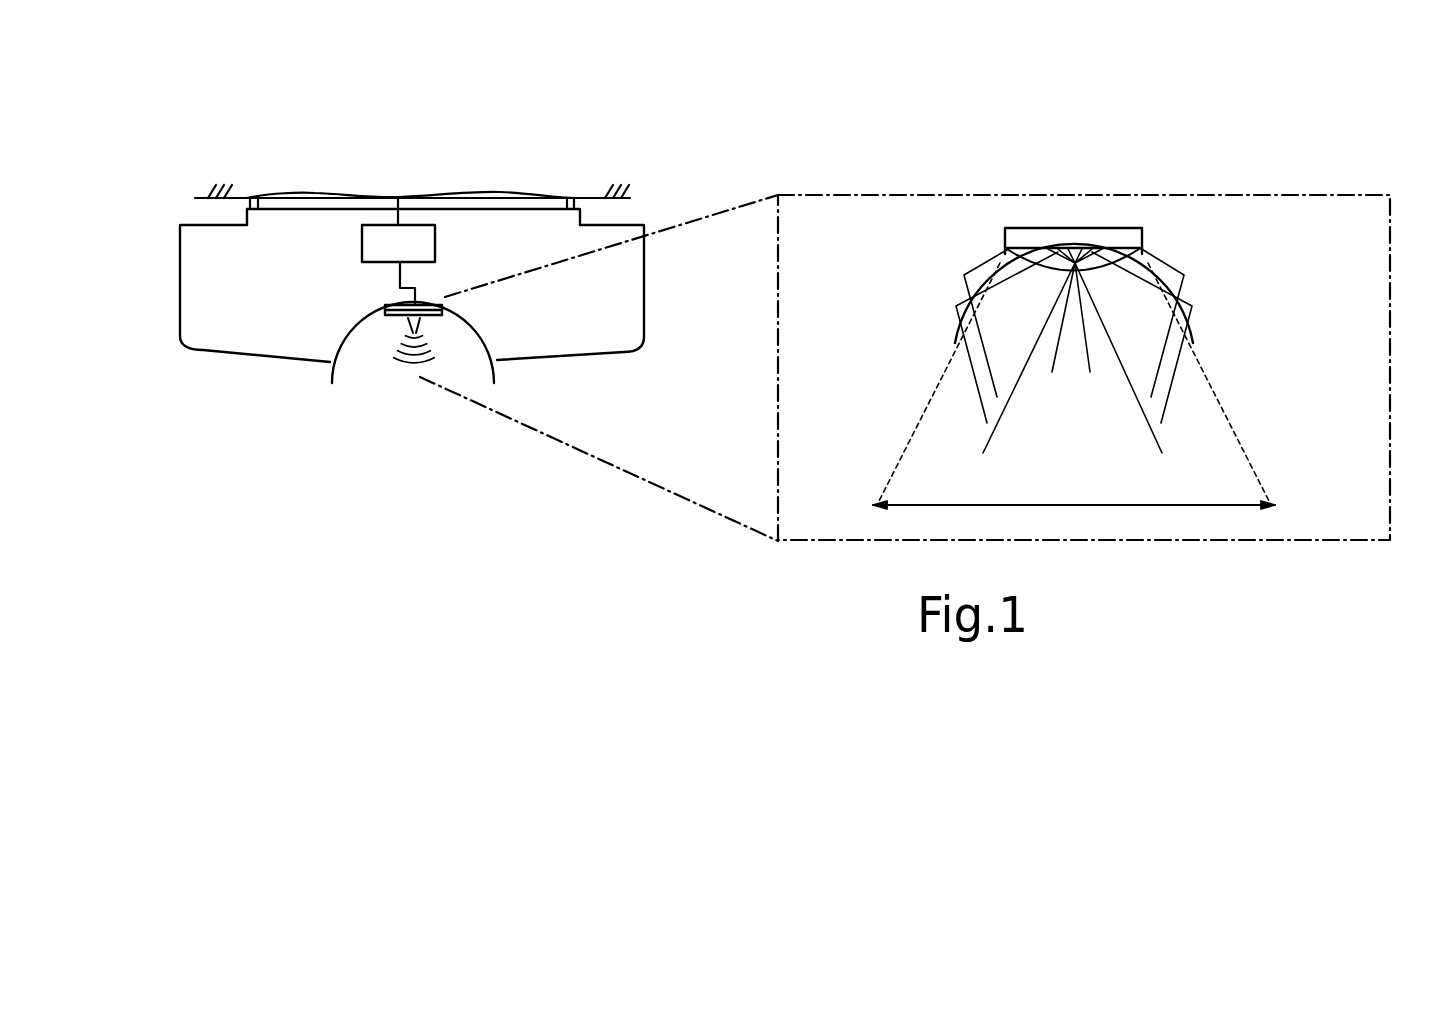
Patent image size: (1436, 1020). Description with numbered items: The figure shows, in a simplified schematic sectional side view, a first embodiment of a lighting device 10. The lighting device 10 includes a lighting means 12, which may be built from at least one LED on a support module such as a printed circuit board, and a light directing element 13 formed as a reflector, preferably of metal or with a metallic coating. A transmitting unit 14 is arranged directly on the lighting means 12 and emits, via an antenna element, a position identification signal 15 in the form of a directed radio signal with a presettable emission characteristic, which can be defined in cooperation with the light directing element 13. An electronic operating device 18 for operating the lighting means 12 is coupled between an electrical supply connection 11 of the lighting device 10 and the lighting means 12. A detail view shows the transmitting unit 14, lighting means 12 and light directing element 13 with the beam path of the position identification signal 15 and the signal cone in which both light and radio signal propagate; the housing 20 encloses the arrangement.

The lighting device 10 is at (288, 158).
The electrical supply connection 11 is at (398, 200).
The lighting means 12 is at (387, 306).
The light directing element 13 is at (478, 331).
The transmitting unit 14 is at (412, 333).
The position identification signal 15 is at (405, 366).
The electronic operating device 18 is at (435, 243).
The housing 20 is at (590, 356).